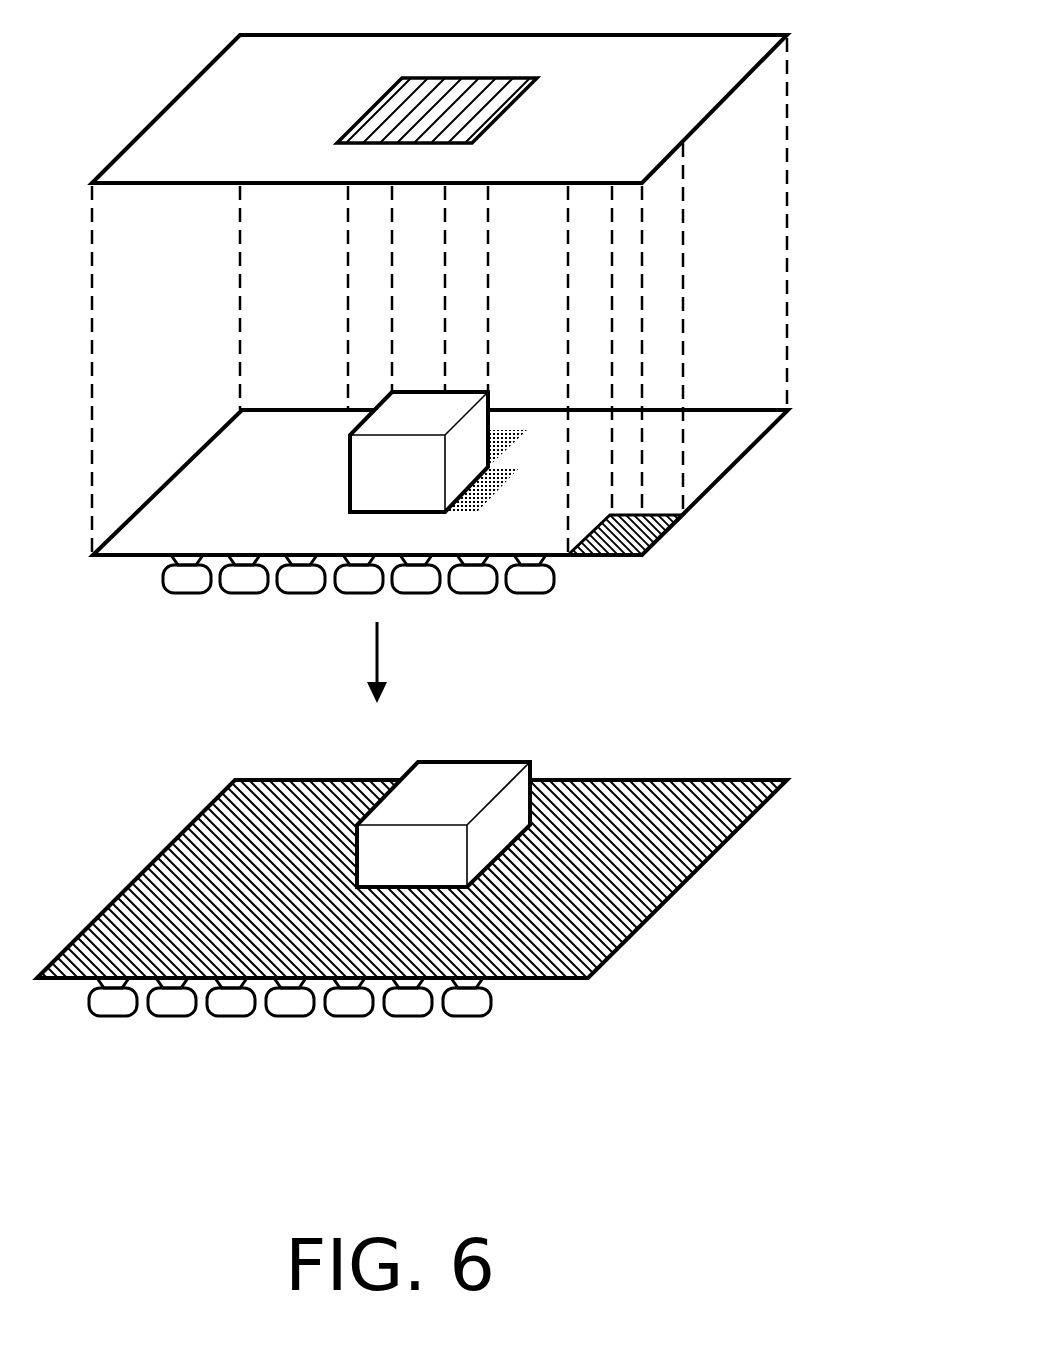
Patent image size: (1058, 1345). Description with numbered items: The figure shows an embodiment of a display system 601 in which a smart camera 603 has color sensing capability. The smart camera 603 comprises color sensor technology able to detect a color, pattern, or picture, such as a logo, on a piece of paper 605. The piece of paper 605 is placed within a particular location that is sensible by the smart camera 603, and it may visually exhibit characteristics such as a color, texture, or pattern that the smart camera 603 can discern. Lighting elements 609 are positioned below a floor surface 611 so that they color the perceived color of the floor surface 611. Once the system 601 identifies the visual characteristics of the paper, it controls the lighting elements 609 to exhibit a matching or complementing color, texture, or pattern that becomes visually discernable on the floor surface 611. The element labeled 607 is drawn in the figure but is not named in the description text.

The system 601 is at (795, 324).
The smart camera 603 is at (367, 107).
The piece of paper 605 is at (665, 537).
The semiconductor die 607 is at (350, 470).
The lighting elements 609 is at (244, 594).
The floor surface 611 is at (735, 440).